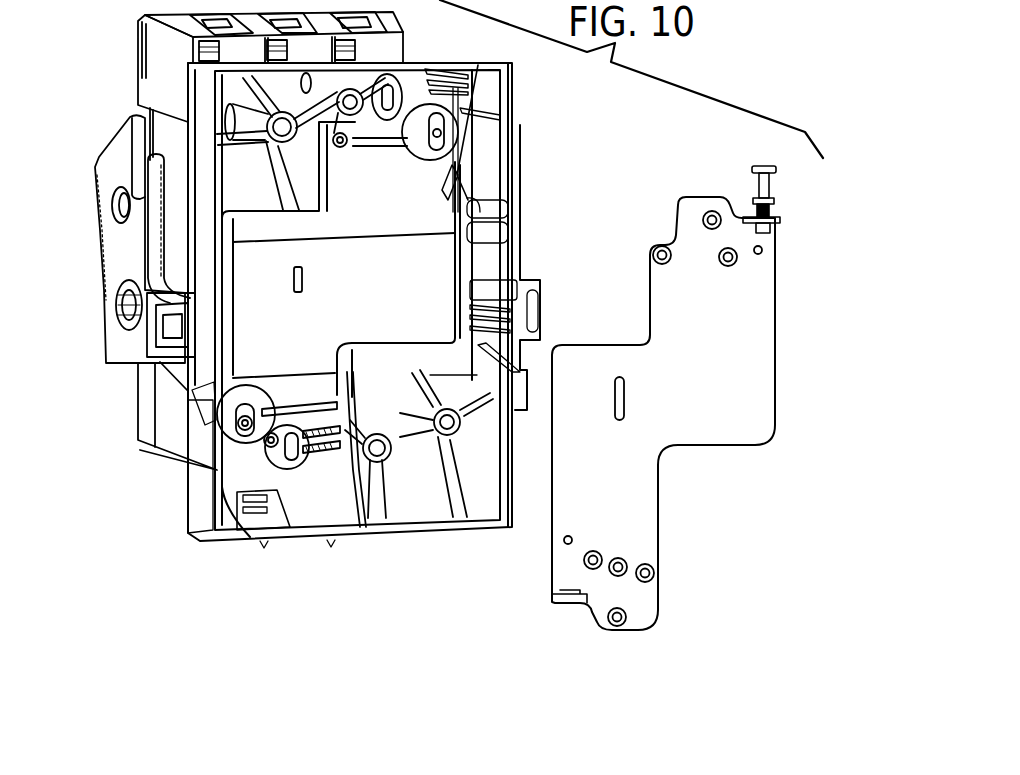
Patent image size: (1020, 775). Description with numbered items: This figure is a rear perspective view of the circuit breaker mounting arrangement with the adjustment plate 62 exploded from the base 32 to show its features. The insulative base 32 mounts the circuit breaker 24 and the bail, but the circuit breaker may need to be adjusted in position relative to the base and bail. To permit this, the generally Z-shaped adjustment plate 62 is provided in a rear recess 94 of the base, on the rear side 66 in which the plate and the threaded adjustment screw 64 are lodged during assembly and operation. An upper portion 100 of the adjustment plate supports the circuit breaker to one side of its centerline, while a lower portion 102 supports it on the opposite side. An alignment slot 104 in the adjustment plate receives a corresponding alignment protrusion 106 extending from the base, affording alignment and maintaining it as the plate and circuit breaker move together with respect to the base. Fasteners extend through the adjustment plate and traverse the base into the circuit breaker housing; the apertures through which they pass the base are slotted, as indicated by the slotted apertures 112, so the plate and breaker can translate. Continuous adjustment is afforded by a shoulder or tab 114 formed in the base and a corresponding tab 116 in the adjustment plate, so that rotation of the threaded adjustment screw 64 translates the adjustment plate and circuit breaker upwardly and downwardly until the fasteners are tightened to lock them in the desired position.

The circuit breaker 24 is at (173, 143).
The base 32 is at (202, 513).
The adjustment plate 62 is at (748, 412).
The threaded adjustment screw 64 is at (758, 190).
The rear side 66 is at (525, 189).
The rear recess 94 is at (460, 165).
The upper portion 100 is at (732, 337).
The lower portion 102 is at (617, 516).
The alignment slot 104 is at (622, 400).
The alignment protrusion 106 is at (303, 273).
The slotted apertures 112 is at (430, 118).
The shoulder or tab 114 is at (483, 76).
The tab 116 is at (775, 221).